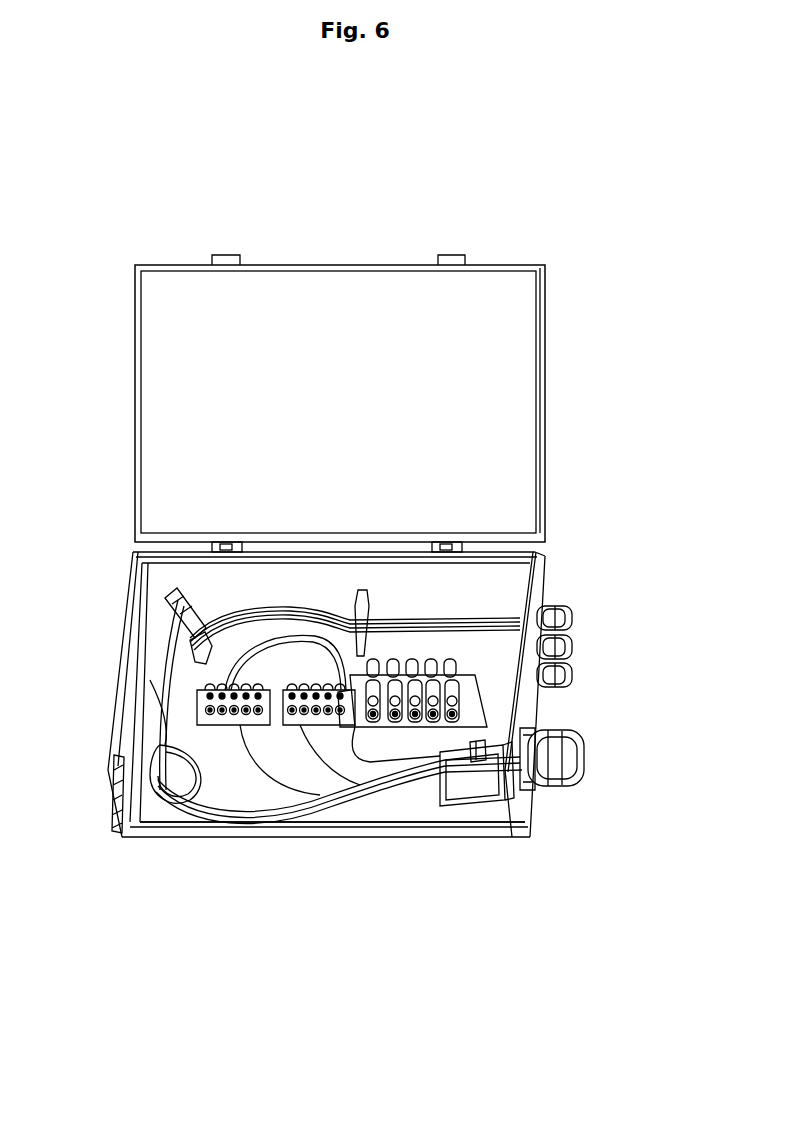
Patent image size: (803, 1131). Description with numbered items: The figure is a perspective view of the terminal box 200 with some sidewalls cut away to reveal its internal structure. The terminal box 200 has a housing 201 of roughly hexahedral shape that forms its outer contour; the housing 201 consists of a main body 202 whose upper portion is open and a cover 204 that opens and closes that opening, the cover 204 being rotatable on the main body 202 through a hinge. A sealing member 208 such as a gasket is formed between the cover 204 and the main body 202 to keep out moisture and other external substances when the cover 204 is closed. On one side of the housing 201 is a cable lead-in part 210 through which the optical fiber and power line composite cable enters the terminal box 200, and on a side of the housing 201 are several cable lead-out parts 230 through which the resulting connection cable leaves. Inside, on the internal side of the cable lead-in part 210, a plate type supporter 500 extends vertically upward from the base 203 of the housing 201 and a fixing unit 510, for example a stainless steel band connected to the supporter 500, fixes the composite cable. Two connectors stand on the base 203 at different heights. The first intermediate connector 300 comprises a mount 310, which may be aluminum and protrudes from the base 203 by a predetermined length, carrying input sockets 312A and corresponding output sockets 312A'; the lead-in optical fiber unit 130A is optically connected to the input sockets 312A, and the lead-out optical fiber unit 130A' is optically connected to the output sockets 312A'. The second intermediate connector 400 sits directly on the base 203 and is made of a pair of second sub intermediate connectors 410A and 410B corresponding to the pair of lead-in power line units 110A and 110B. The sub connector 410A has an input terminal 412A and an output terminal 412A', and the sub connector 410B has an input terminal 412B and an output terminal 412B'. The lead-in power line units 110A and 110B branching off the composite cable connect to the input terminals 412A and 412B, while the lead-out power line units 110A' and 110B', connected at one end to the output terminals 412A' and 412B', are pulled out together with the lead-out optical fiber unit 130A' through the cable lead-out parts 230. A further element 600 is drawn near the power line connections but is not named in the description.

The terminal box 200 is at (552, 223).
The housing 201 is at (606, 380).
The main body 202 is at (545, 560).
The base 203 is at (500, 822).
The cover 204 is at (510, 380).
The sealing member 208 is at (133, 552).
The cable lead-in part 210 is at (583, 757).
The cable lead-out part 230 is at (565, 614).
The first intermediate connector 300 is at (496, 720).
The mount 310 is at (480, 692).
The input socket 312A is at (516, 661).
The output socket 312A' is at (509, 729).
The second intermediate connector 400 is at (185, 700).
The second sub intermediate connector 410A is at (250, 726).
The second sub intermediate connector 410B is at (300, 726).
The input terminal 412A is at (254, 809).
The output terminal 412A' is at (251, 576).
The input terminal 412B is at (330, 576).
The output terminal 412B' is at (338, 809).
The supporter 500 is at (452, 804).
The fixing unit 510 is at (478, 762).
The cable connector 600 is at (165, 600).
The lead-in power line unit 110A is at (136, 701).
The lead-out power line unit 110A' is at (288, 630).
The lead-in power line unit 110B is at (213, 667).
The lead-out power line unit 110B' is at (301, 836).
The lead-in optical fiber unit 130A is at (437, 805).
The lead-out optical fiber unit 130A' is at (300, 836).